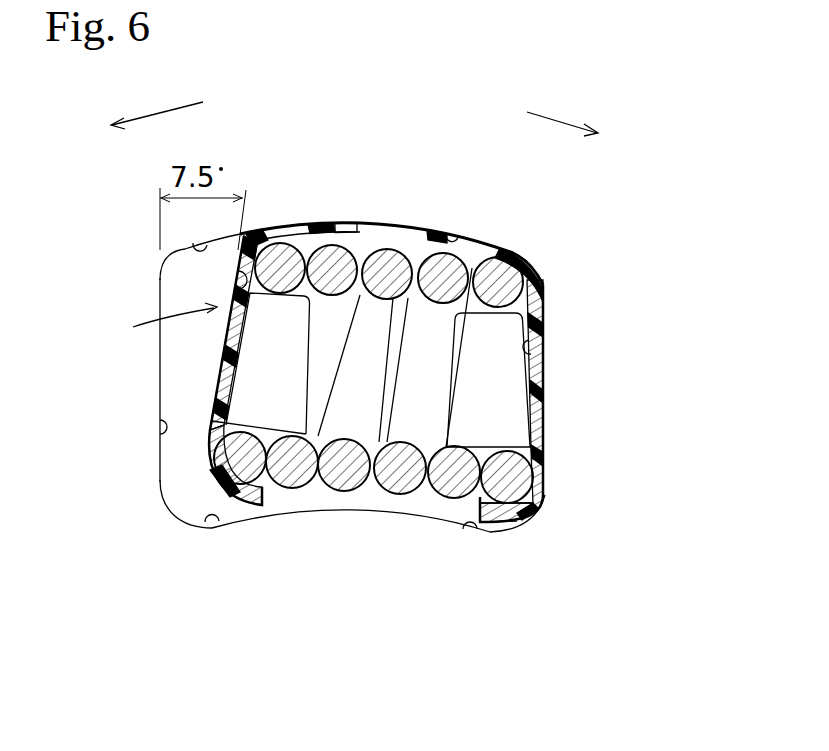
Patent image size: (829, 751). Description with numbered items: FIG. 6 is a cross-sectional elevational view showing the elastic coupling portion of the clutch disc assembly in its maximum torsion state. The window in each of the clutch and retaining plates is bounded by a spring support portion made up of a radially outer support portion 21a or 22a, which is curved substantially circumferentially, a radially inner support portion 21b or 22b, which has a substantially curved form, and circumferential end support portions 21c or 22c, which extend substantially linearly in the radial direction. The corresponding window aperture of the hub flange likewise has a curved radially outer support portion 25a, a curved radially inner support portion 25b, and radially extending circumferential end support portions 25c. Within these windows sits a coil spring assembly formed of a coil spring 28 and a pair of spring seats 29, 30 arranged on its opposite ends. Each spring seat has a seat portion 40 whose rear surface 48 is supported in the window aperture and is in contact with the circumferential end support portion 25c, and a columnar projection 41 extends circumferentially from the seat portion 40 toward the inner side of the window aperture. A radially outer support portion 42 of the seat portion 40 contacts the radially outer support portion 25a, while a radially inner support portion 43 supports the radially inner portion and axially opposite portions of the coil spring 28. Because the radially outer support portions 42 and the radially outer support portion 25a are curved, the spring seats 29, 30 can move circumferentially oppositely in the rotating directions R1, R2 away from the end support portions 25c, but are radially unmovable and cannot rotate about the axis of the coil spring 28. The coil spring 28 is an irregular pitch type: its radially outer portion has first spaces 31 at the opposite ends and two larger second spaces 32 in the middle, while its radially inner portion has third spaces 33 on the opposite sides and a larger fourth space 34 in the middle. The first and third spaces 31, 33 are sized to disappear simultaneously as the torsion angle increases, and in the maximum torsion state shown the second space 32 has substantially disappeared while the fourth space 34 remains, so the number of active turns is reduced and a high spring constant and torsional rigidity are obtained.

The radially outer support portion 21a is at (142, 238).
The radially outer support portion 22a is at (190, 246).
The radially inner support portion 21b is at (314, 538).
The radially inner support portion 22b is at (205, 520).
The circumferential end support portions 21c is at (356, 387).
The circumferential end support portions 22c is at (212, 432).
The radially outer support portion 25a is at (458, 238).
The radially inner support portion 25b is at (473, 530).
The circumferential end support portions 25c is at (232, 285).
The coil spring 28 is at (338, 224).
The spring seat 29 is at (153, 323).
The spring seat 30 is at (548, 306).
The first space 31 is at (304, 243).
The second space 32 is at (363, 249).
The third space 33 is at (317, 492).
The fourth space 34 is at (368, 492).
The seat portion 40 is at (230, 343).
The projection 41 is at (265, 383).
The radially outer support portion 42 is at (300, 228).
The radially inner support portion 43 is at (252, 500).
The rear surface 48 is at (205, 476).
The rotating direction R1 is at (135, 127).
The rotation direction R2 is at (582, 134).